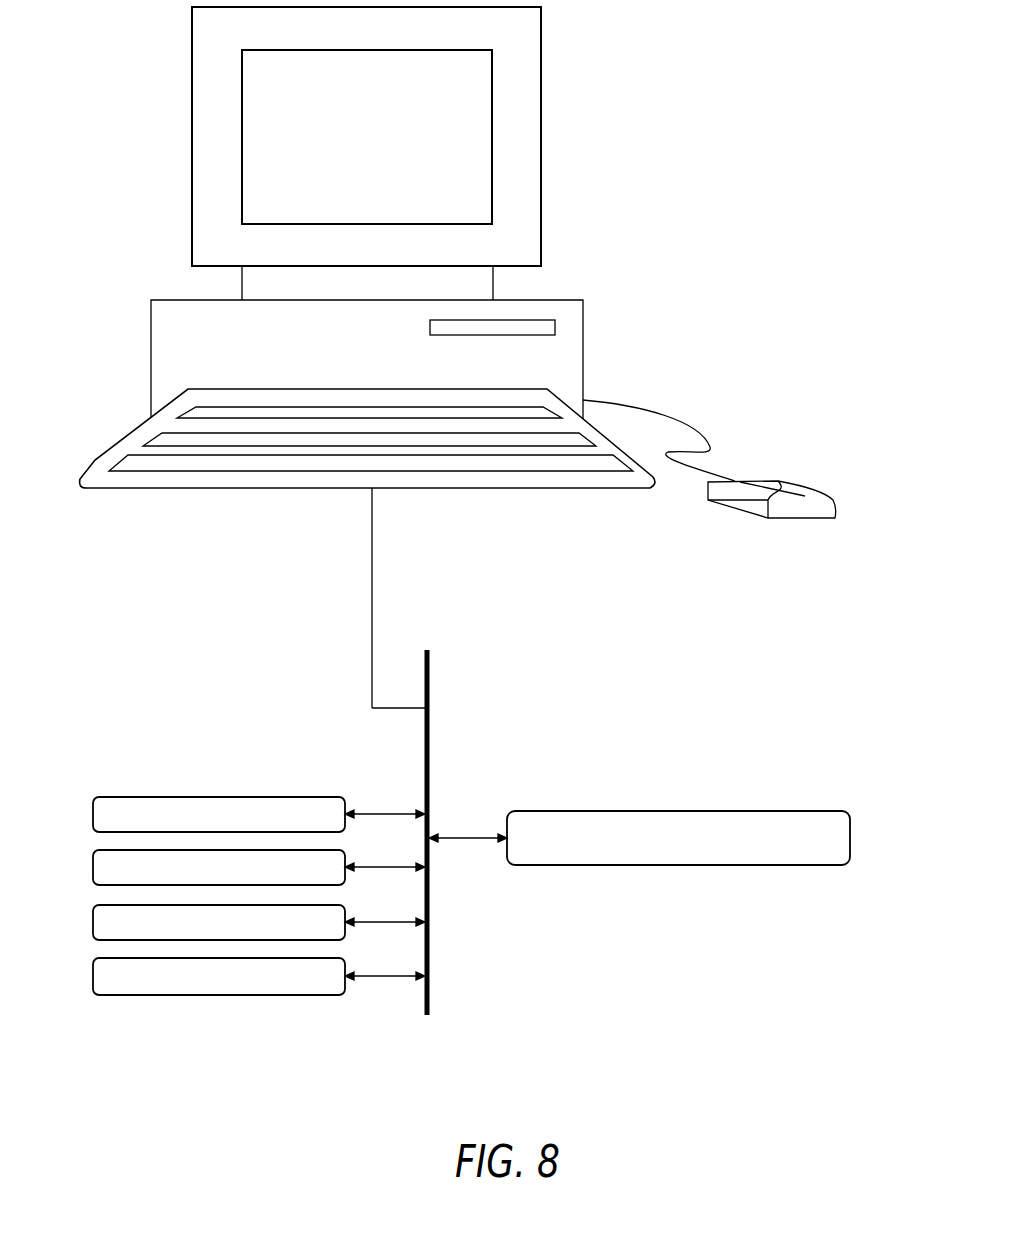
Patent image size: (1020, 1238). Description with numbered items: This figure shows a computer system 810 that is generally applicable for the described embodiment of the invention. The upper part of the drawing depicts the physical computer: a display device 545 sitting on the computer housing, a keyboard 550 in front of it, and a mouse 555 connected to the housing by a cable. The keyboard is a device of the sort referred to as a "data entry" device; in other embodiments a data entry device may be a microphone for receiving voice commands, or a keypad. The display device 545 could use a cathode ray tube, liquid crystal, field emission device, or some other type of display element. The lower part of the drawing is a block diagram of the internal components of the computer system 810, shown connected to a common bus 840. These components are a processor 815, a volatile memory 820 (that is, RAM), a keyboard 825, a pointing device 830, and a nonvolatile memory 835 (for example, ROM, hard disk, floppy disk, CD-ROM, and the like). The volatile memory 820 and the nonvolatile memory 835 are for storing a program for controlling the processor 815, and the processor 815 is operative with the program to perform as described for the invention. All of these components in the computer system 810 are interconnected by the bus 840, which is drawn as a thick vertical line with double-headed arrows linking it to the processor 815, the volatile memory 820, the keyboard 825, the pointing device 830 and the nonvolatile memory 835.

The display device 545 is at (541, 102).
The keyboard 550 is at (182, 488).
The mouse 555 is at (795, 522).
The computer system 810 is at (326, 540).
The processor 815 is at (93, 815).
The volatile memory 820 is at (93, 869).
The keyboard 825 is at (93, 924).
The pointing device 830 is at (93, 977).
The nonvolatile memory 835 is at (850, 832).
The bus 840 is at (429, 765).